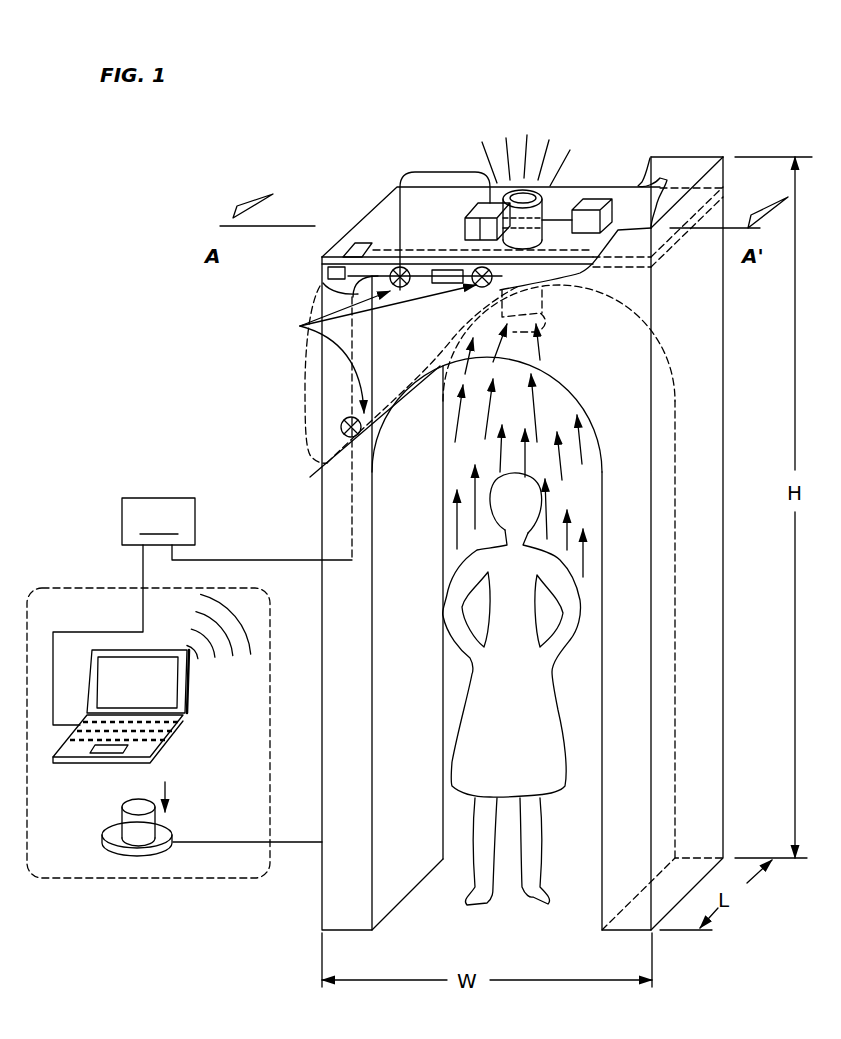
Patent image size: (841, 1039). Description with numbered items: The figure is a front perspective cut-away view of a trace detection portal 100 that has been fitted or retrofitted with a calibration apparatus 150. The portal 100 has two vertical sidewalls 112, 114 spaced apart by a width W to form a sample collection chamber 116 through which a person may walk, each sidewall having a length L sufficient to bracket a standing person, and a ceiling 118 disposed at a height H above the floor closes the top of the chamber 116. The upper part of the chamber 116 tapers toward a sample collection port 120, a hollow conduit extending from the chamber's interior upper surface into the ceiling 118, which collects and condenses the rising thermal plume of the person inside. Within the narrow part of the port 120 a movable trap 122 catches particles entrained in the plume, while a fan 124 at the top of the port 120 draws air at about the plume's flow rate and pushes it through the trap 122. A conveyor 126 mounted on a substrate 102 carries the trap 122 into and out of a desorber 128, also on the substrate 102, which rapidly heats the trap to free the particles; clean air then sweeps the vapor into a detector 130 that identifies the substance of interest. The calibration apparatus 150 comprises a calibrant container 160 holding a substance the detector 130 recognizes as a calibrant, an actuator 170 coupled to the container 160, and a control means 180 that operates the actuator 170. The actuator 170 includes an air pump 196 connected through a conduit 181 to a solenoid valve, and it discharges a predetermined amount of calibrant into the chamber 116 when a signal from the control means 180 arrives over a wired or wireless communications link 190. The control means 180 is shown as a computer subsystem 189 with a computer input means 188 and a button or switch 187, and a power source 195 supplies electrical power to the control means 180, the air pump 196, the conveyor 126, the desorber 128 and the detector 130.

The trace detection portal 100 is at (345, 88).
The substrate 102 is at (387, 196).
The vertical sidewall 112 is at (322, 510).
The vertical sidewall 114 is at (724, 547).
The sample collection chamber 116 is at (399, 909).
The ceiling 118 is at (682, 167).
The sample collection port 120 is at (390, 390).
The movable trap 122 is at (545, 212).
The fan 124 is at (540, 190).
The conveyor 126 is at (593, 210).
The desorber 128 is at (497, 207).
The detector 130 is at (328, 270).
The calibration apparatus 150 is at (305, 370).
The calibrant container 160 is at (435, 270).
The actuator 170 is at (367, 349).
The control means 180 is at (186, 879).
The conduit 181 is at (352, 392).
The switch 187 is at (103, 840).
The computer input means 188 is at (150, 747).
The computer subsystem 189 is at (190, 710).
The communications link 190 is at (185, 632).
The power source 195 is at (202, 611).
The air pump 196 is at (341, 429).